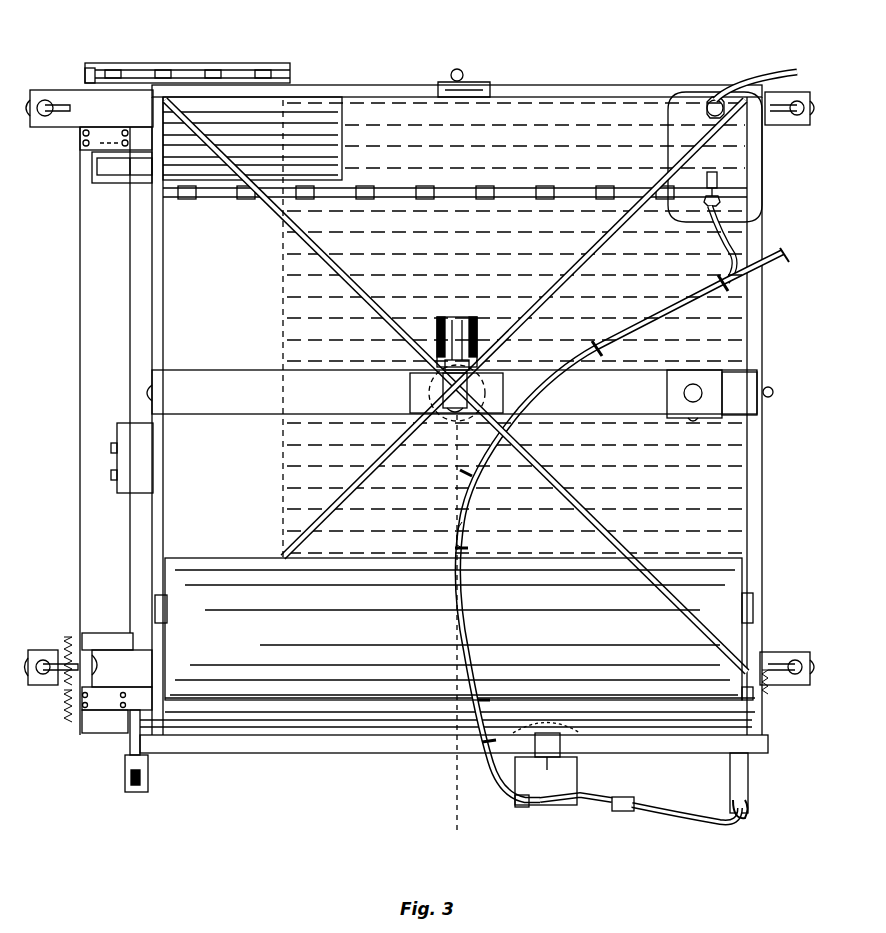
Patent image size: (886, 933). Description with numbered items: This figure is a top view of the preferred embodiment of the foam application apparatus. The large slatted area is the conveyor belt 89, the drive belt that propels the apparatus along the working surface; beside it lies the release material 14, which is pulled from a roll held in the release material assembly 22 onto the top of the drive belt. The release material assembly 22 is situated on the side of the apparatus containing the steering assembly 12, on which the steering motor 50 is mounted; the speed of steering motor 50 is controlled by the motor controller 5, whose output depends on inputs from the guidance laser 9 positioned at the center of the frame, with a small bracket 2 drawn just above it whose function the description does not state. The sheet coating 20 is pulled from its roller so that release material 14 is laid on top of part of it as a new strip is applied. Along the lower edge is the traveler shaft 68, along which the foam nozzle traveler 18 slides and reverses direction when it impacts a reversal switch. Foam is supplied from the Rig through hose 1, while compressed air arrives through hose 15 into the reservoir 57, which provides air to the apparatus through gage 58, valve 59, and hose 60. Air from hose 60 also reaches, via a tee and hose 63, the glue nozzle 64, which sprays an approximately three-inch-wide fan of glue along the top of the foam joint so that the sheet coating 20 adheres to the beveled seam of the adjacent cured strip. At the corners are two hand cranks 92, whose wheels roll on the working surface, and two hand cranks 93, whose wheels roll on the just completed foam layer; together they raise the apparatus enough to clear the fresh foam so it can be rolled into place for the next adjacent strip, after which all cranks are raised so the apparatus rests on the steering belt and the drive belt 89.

The hose 1 is at (774, 264).
The hose clip bracket 2 is at (462, 320).
The motor controller 5 is at (118, 488).
The guidance laser 9 is at (443, 394).
The steering assembly 12 is at (80, 392).
The release material 14 is at (232, 277).
The hose 15 is at (773, 73).
The foam nozzle traveler 18 is at (560, 757).
The sheet coating 20 is at (245, 557).
The release material assembly 22 is at (145, 62).
The steering motor 50 is at (101, 633).
The reservoir 57 is at (708, 154).
The gage 58 is at (718, 176).
The valve 59 is at (722, 200).
The hose 60 is at (735, 242).
The hose 63 is at (520, 804).
The nozzle 64 is at (750, 815).
The traveler shaft 68 is at (362, 752).
The conveyor belt 89 is at (490, 263).
The hand cranks 92 is at (47, 90).
The hand cranks 93 is at (790, 128).